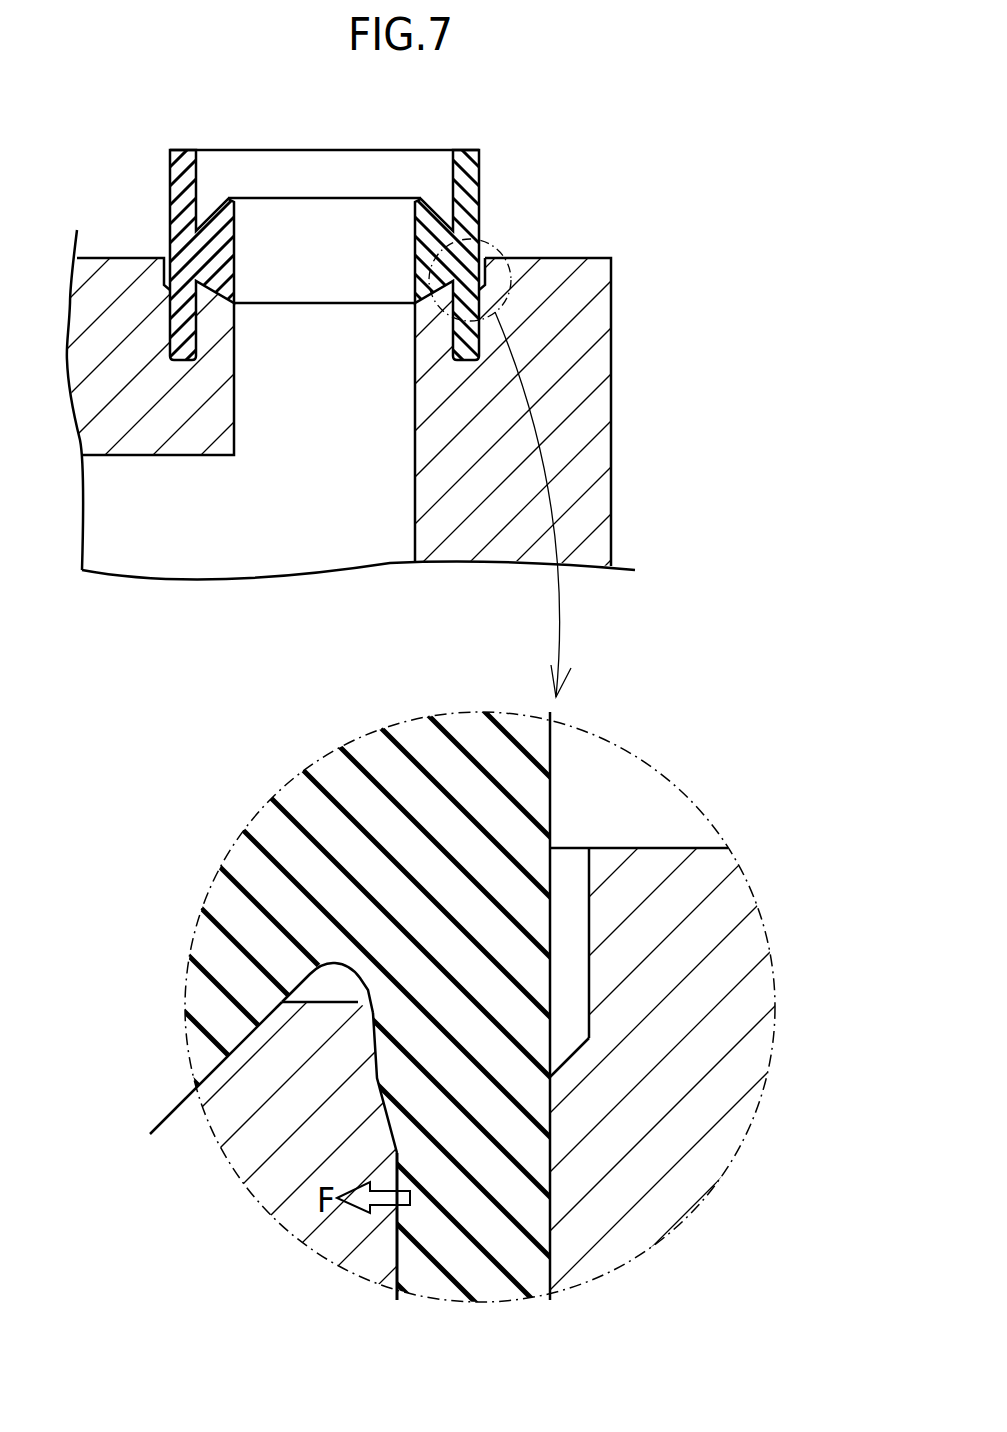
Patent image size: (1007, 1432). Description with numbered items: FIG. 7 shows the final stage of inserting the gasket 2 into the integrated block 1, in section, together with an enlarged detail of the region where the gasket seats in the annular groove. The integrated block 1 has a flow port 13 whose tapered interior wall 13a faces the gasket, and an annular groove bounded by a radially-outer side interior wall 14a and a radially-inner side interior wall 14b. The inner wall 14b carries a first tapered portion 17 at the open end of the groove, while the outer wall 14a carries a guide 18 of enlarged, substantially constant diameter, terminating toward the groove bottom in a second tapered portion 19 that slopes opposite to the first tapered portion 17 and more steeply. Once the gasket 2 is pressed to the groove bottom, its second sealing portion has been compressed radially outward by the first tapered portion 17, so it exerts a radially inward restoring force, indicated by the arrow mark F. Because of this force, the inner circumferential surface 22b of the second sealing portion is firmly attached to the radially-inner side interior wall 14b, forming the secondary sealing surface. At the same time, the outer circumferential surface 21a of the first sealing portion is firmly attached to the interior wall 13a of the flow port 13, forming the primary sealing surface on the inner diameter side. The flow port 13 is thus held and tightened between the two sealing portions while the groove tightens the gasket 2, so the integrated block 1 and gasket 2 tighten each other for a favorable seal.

The integrated block 1 is at (611, 403).
The gasket 2 is at (479, 172).
The flow port 13 is at (503, 1005).
The interior wall 13a is at (255, 1027).
The radially-outer side interior wall 14a is at (550, 1228).
The radially-inner side interior wall 14b is at (399, 1258).
The first tapered portion 17 is at (369, 998).
The guide 18 is at (587, 933).
The second tapered portion 19 is at (577, 1036).
The outer circumferential surface 21a is at (229, 1048).
The inner circumferential surface 22b is at (393, 1127).